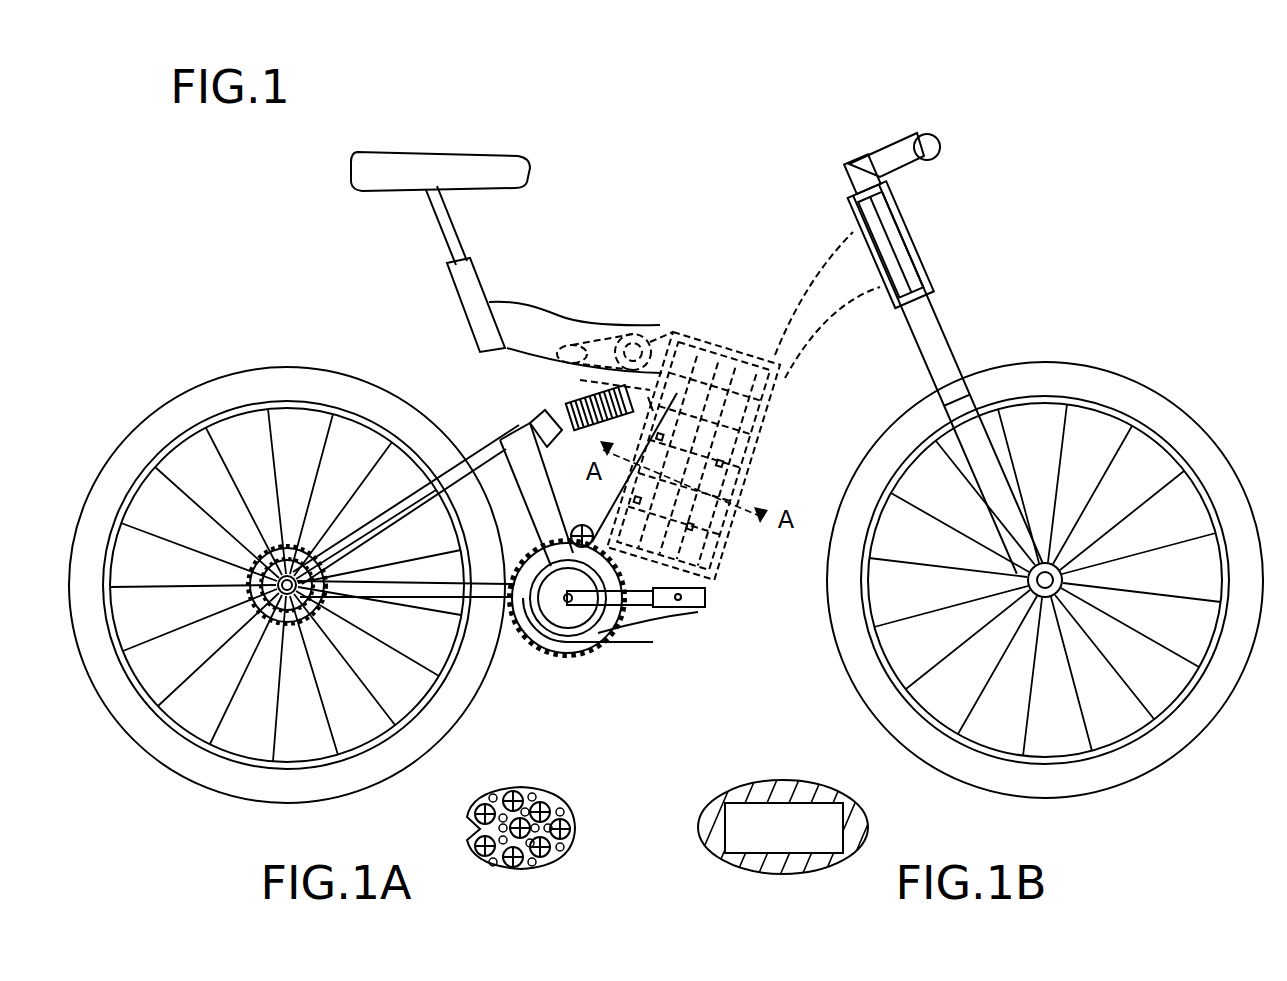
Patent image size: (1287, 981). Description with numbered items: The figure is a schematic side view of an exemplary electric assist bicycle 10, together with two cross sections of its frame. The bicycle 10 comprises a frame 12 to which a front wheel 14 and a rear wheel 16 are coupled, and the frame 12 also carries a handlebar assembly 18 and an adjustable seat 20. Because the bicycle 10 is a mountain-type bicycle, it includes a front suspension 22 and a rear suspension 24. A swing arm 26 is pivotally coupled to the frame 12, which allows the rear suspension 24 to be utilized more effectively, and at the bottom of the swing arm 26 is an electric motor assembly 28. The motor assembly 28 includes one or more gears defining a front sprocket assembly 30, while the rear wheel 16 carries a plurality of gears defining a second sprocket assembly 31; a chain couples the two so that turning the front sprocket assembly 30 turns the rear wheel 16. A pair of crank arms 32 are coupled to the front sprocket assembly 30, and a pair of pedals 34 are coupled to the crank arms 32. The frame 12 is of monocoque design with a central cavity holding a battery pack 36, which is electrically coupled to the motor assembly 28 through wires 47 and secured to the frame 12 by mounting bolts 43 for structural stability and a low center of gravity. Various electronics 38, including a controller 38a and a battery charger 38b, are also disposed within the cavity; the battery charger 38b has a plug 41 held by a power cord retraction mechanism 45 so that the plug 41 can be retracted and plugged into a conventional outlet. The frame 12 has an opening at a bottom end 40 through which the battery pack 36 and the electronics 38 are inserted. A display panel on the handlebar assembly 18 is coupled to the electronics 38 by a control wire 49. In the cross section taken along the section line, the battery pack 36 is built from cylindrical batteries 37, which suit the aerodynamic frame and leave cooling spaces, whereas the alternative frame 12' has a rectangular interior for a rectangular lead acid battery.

In FIG. 1, the electric assist bicycle 10 is at (746, 136).
In FIG. 1, the frame 12 is at (575, 306).
In FIG. 1A, the frame 12 is at (541, 825).
In FIG. 1B, the alternative frame 12' is at (778, 812).
In FIG. 1, the front wheel 14 is at (1110, 368).
In FIG. 1, the rear wheel 16 is at (287, 538).
In FIG. 1, the handlebar assembly 18 is at (928, 133).
In FIG. 1, the adjustable seat 20 is at (508, 150).
In FIG. 1, the front suspension 22 is at (1002, 392).
In FIG. 1, the rear suspension 24 is at (545, 420).
In FIG. 1, the swing arm 26 is at (418, 448).
In FIG. 1, the electric motor assembly 28 is at (560, 662).
In FIG. 1, the front sprocket assembly 30 is at (532, 640).
In FIG. 1, the second sprocket assembly 31 is at (245, 668).
In FIG. 1, the crank arms 32 is at (650, 600).
In FIG. 1, the pedals 34 is at (702, 612).
In FIG. 1, the battery pack 36 is at (700, 556).
In FIG. 1A, the battery pack 36 is at (506, 868).
In FIG. 1, the cylindrical batteries 37 is at (682, 567).
In FIG. 1A, the cylindrical batteries 37 is at (557, 855).
In FIG. 1, the electronics 38 is at (740, 330).
In FIG. 1, the controller 38a is at (772, 385).
In FIG. 1, the battery charger 38b is at (790, 368).
In FIG. 1, the bottom end 40 is at (633, 618).
In FIG. 1, the plug 41 is at (595, 335).
In FIG. 1, the mounting bolts 43 is at (608, 438).
In FIG. 1, the power cord retraction mechanism 45 is at (642, 335).
In FIG. 1, the wires 47 is at (597, 384).
In FIG. 1, the control wire 49 is at (822, 285).